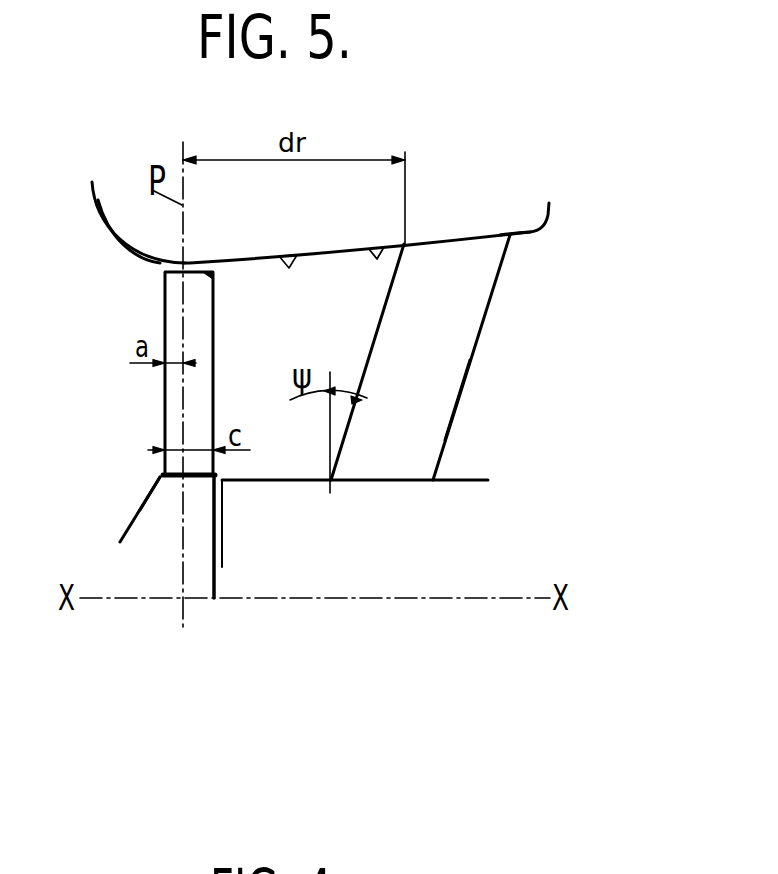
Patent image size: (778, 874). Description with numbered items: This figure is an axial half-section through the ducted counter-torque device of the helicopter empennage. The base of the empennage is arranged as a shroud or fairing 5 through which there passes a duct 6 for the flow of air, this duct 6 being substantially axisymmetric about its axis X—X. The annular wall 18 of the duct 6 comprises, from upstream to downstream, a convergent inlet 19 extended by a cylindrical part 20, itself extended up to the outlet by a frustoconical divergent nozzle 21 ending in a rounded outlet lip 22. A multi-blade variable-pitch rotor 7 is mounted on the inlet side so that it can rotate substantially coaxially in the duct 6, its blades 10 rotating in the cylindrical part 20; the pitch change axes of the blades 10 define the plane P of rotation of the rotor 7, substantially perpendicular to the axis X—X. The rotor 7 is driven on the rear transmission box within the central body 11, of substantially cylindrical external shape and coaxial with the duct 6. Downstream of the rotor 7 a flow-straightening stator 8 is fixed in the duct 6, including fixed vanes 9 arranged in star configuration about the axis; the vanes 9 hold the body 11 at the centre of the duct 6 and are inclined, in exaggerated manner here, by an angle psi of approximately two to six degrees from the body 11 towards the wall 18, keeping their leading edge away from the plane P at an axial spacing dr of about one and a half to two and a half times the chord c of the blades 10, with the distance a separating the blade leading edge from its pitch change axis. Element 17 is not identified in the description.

The shroud or fairing 5 is at (123, 217).
The convergent inlet 19 is at (118, 245).
The rounded outlet lip 22 is at (551, 218).
The duct 6 is at (334, 291).
The fixed vanes 9 is at (455, 322).
The flow-straightening stator 8 is at (458, 445).
The annular wall 18 is at (288, 257).
The frustoconical divergent nozzle 21 is at (386, 247).
The blades 10 is at (176, 303).
The cylindrical part 20 is at (211, 275).
The multi-blade variable-pitch rotor 7 is at (140, 493).
The inclined flank 17 is at (157, 541).
The central body 11 is at (432, 506).